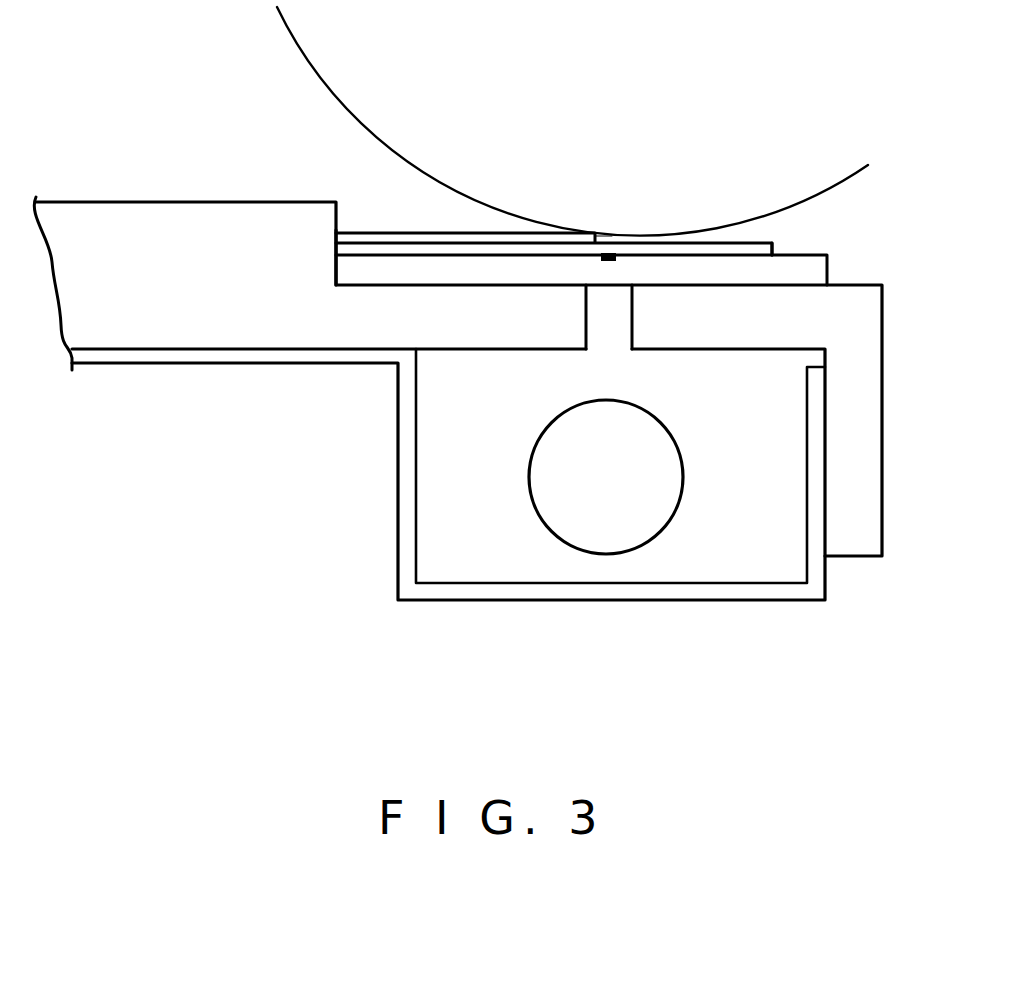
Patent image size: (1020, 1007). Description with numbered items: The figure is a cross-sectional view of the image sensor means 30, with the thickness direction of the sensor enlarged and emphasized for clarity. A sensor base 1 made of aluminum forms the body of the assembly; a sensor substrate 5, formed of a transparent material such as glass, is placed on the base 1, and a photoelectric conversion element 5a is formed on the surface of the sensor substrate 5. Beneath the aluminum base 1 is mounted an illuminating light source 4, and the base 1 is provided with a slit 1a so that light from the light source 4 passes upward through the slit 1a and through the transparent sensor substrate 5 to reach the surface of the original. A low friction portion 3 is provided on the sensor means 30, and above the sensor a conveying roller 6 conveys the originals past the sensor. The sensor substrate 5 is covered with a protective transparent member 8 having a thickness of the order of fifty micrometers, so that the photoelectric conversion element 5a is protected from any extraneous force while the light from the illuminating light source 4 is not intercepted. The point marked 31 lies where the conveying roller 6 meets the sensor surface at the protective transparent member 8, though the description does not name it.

The sensor base 1 is at (184, 333).
The slit 1a is at (597, 313).
The low friction portion 3 is at (385, 238).
The illuminating light source 4 is at (609, 540).
The sensor substrate 5 is at (798, 270).
The photoelectric conversion element 5a is at (617, 259).
The conveying roller 6 is at (320, 52).
The protective transparent member 8 is at (601, 252).
The image sensor means 30 is at (318, 382).
The contact point 31 is at (603, 219).